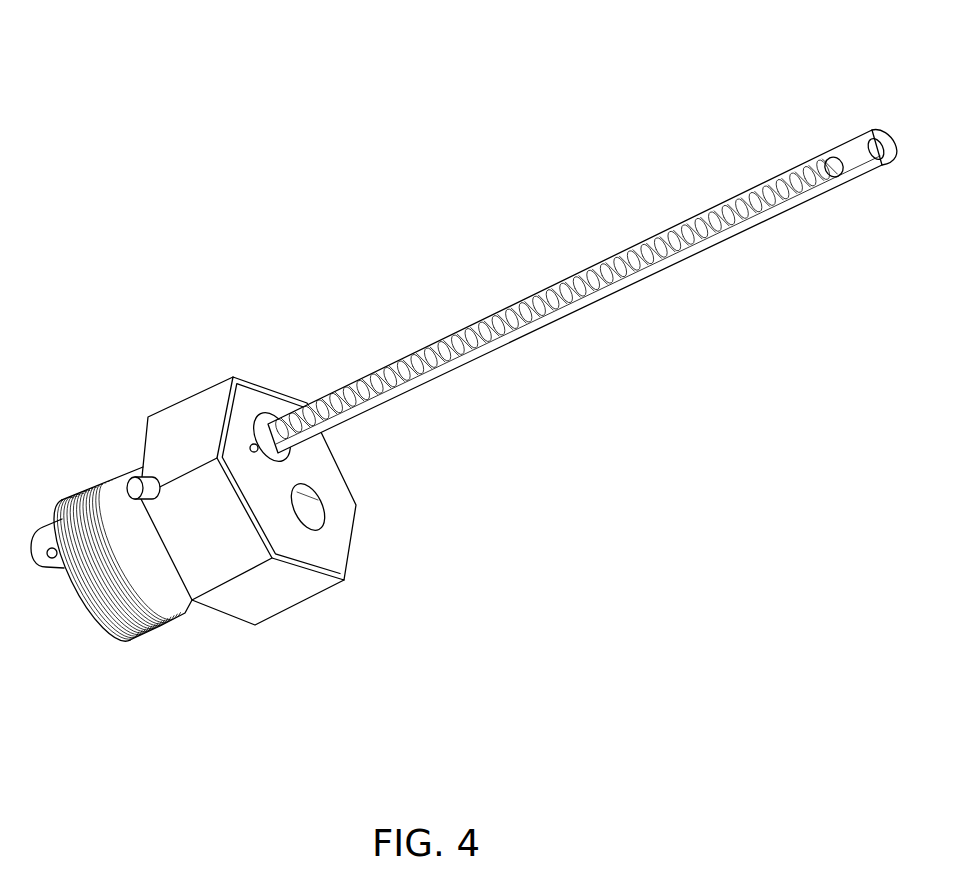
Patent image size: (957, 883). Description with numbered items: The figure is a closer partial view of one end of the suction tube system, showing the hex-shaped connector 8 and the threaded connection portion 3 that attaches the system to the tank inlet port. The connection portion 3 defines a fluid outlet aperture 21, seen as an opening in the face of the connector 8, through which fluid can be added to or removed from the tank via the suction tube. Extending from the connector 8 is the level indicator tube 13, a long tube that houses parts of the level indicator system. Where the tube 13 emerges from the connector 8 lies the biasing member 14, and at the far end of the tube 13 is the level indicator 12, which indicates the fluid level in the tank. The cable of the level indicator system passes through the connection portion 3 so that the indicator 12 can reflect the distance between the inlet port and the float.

The connection portion 3 is at (152, 607).
The connector 8 is at (278, 345).
The level indicator 12 is at (823, 157).
The level indicator tube 13 is at (582, 270).
The biasing member 14 is at (392, 361).
The fluid outlet aperture 21 is at (312, 510).